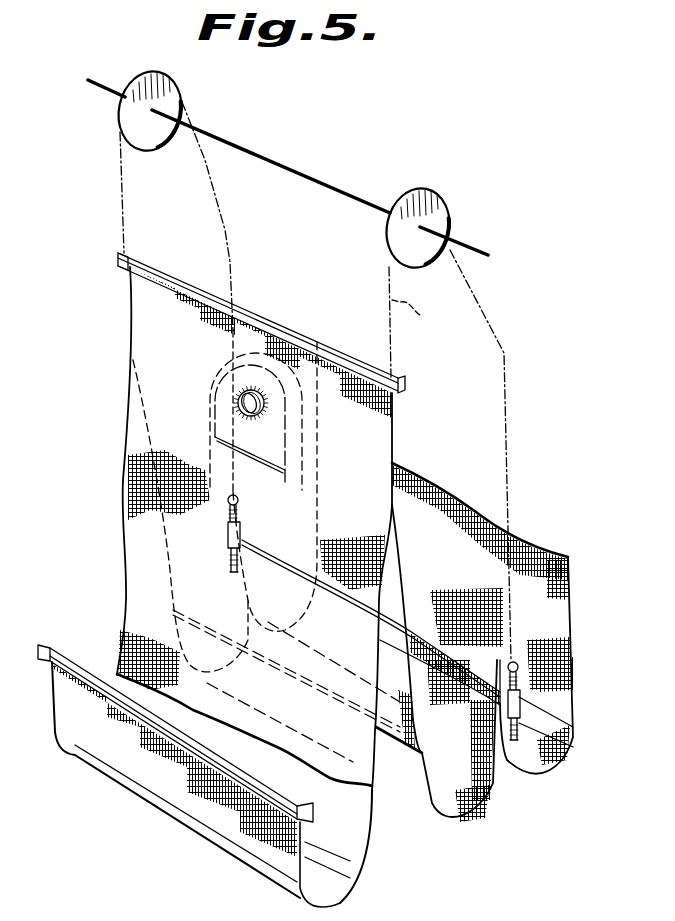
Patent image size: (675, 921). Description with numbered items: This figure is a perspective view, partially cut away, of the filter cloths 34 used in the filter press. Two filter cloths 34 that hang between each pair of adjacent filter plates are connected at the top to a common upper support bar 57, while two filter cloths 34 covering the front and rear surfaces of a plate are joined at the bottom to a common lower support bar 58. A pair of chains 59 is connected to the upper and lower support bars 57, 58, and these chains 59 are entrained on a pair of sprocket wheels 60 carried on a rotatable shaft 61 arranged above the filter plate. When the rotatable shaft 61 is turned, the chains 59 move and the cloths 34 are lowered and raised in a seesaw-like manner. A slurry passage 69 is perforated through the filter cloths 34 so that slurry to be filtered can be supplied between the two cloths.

The filter cloth 34 is at (143, 547).
The upper support bar 57 is at (292, 336).
The lower support bar 58 is at (97, 684).
The chain 59 is at (218, 222).
The sprocket wheel 60 is at (150, 80).
The rotatable shaft 61 is at (306, 173).
The slurry passage 69 is at (238, 403).